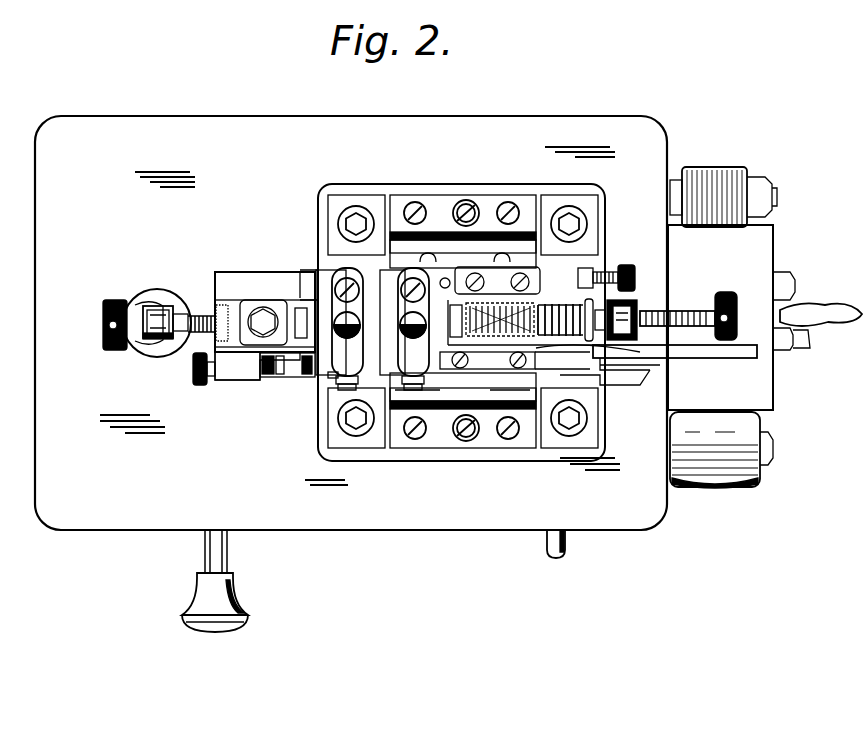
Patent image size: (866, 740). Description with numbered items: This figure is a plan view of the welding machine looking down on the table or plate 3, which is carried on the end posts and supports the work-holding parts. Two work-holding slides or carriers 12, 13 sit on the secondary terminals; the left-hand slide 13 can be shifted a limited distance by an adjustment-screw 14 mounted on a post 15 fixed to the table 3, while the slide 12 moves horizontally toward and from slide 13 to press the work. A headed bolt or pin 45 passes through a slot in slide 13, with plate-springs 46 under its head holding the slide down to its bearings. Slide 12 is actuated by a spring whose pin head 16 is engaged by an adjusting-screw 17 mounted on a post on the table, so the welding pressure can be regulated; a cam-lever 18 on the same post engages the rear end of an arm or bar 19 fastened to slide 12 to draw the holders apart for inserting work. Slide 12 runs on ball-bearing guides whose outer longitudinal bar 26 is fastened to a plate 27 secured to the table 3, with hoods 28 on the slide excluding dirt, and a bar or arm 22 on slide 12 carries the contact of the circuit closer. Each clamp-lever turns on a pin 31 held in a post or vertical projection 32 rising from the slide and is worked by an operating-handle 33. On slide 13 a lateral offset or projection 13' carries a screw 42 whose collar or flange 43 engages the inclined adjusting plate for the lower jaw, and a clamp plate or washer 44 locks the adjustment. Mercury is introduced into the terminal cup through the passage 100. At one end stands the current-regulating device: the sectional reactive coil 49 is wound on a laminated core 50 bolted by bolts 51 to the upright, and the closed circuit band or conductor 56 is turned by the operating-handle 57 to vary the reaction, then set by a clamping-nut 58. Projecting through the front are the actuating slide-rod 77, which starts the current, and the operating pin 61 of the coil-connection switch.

The table or plate 3 is at (351, 323).
The passage 100 is at (445, 278).
The longitudinal bar 26 is at (500, 210).
The plate 27 is at (566, 440).
The hoods 28 is at (463, 320).
The bar or arm 22 is at (497, 280).
The post or vertical projection 32 is at (330, 283).
The pin 31 is at (393, 280).
The operating-handle 33 is at (380, 329).
The work-holding slide 12 is at (330, 275).
The post / spring 15 is at (153, 305).
The adjustment-screw 14 is at (206, 298).
The plate-springs 46 is at (244, 312).
The work-holding slide 13 is at (226, 318).
The lateral offset or projection 13' is at (237, 366).
The headed bolt or pin 45 is at (262, 307).
The screw 42 is at (200, 388).
The collar or flange 43 is at (285, 378).
The clamp plate or washer 44 is at (330, 380).
The arm or bar 19 is at (540, 357).
The cam-lever 18 is at (700, 358).
The closed circuit band or conductor 56 is at (731, 317).
The laminated core 50 is at (722, 158).
The bolts 51 is at (777, 197).
The sectional reactive coil 49 is at (760, 482).
The adjusting-screw 17 is at (698, 298).
The head of pin 16 is at (610, 288).
The operating-handle 57 is at (838, 323).
The clamping-nut 58 is at (805, 348).
The actuating slide-rod 77 is at (228, 552).
The operating handle or pin 61 is at (566, 552).